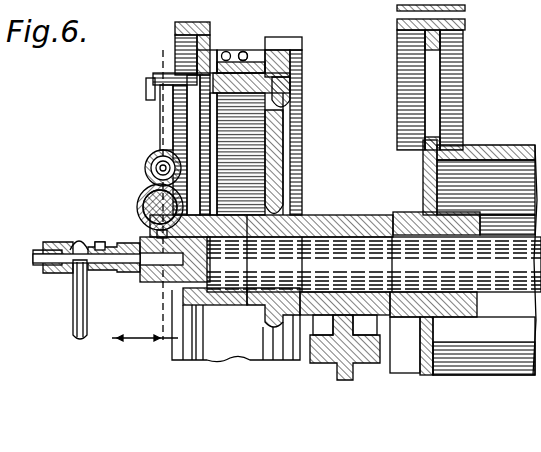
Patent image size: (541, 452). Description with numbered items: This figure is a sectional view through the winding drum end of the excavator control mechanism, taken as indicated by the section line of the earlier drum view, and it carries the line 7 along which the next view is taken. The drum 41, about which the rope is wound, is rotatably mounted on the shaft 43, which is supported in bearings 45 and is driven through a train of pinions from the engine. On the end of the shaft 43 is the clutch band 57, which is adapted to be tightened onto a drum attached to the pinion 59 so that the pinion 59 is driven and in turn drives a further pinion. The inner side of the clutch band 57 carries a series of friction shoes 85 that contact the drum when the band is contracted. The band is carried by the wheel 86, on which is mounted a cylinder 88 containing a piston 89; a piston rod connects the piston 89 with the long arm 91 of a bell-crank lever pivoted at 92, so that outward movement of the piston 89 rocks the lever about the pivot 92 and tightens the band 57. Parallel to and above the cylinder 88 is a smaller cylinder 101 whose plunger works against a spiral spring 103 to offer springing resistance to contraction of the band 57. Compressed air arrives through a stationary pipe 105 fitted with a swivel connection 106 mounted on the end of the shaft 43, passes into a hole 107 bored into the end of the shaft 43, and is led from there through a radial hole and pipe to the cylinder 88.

The drum 41 is at (522, 123).
The shaft 43 is at (374, 264).
The bearings 45 is at (347, 215).
The clutch band 57 is at (243, 62).
The pinion 59 is at (302, 50).
The friction shoes 85 is at (236, 62).
The wheel 86 is at (174, 42).
The cylinder 88 is at (139, 197).
The piston 89 is at (138, 210).
The long arm 91 is at (165, 102).
The pivot 92 is at (146, 88).
The smaller cylinder 101 is at (162, 130).
The spiral spring 103 is at (146, 165).
The pipe 105 is at (87, 290).
The swivel connection 106 is at (68, 276).
The hole 107 is at (138, 283).
The line 7 is at (145, 351).